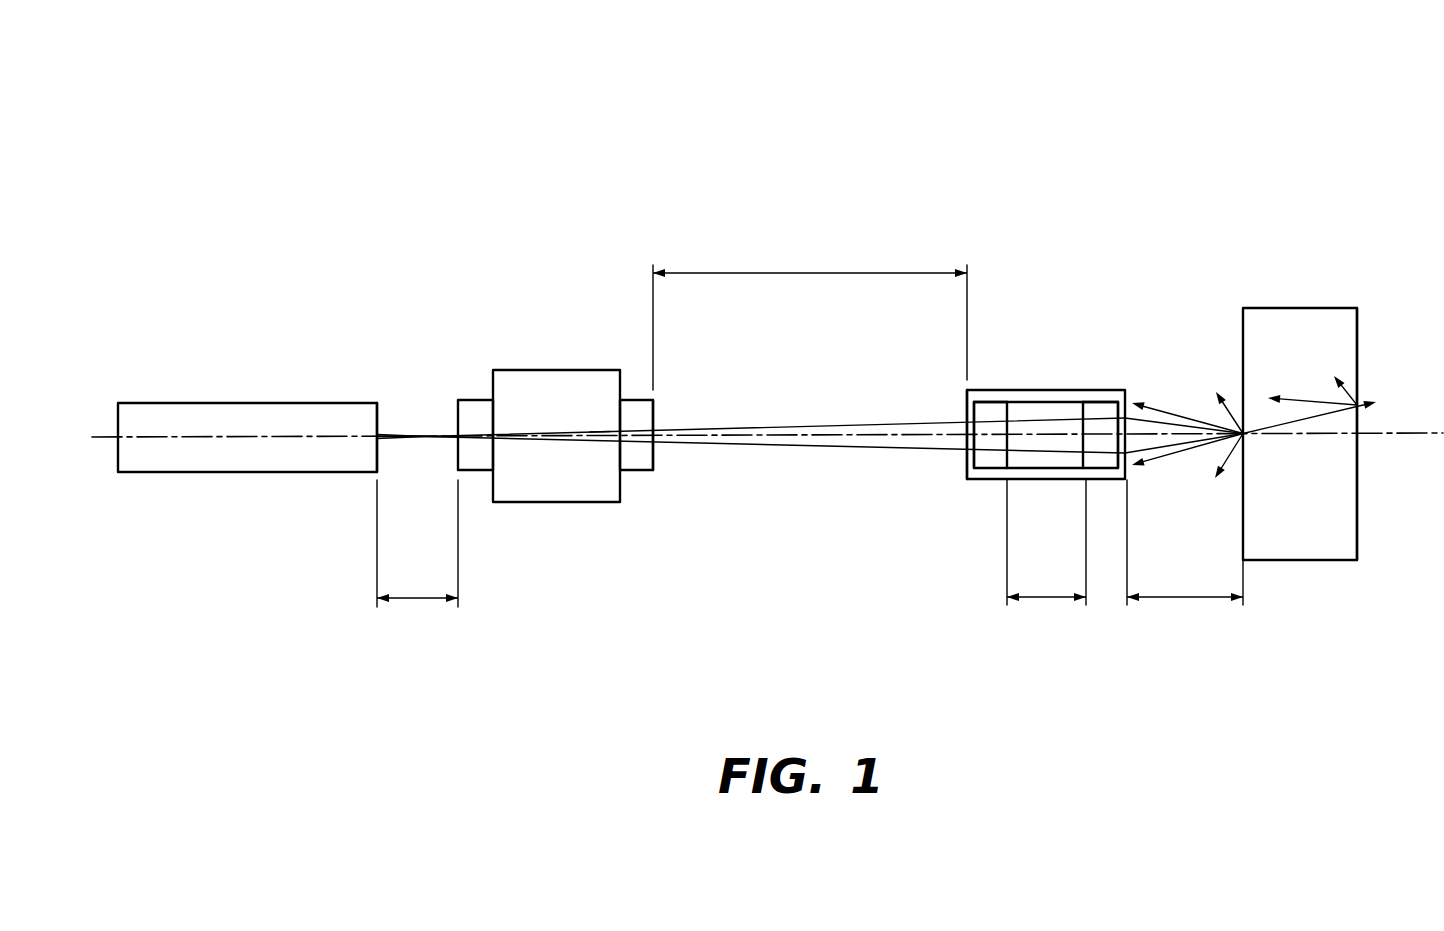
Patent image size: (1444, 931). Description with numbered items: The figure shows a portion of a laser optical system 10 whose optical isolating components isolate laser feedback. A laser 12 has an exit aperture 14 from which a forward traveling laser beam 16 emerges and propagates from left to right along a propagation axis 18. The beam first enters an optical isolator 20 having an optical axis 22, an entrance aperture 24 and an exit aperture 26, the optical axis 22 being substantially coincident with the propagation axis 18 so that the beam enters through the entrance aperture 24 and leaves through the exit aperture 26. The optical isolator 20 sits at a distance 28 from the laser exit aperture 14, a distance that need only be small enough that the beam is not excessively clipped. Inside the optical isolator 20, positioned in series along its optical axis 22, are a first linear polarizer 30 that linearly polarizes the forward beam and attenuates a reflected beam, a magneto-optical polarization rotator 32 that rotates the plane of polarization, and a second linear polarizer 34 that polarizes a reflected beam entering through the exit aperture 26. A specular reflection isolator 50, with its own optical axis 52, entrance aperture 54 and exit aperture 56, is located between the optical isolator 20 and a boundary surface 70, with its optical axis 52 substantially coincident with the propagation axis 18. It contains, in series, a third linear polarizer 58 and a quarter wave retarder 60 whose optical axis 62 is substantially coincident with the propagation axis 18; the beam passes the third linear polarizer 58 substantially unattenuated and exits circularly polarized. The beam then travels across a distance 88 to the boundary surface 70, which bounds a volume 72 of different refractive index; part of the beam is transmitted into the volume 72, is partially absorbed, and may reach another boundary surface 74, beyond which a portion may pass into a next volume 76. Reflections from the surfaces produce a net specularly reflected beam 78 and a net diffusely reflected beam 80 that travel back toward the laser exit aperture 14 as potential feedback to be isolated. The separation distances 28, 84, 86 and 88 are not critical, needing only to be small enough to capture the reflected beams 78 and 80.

The laser optical system 10 is at (345, 210).
The laser 12 is at (235, 408).
The exit aperture 14 is at (378, 412).
The forward traveling laser beam 16 is at (423, 436).
The propagation axis 18 is at (820, 436).
The optical isolator 20 is at (586, 361).
The optical axis 22 is at (600, 432).
The entrance aperture 24 is at (457, 450).
The exit aperture 26 is at (657, 453).
The distance 28 is at (418, 600).
The first linear polarizer 30 is at (475, 412).
The magneto-optical polarization rotator 32 is at (543, 392).
The second linear polarizer 34 is at (645, 417).
The specular reflection isolator 50 is at (1016, 376).
The optical axis 52 is at (993, 433).
The entrance aperture 54 is at (965, 460).
The exit aperture 56 is at (1130, 465).
The third linear polarizer 58 is at (990, 412).
The quarter wave retarder 60 is at (1102, 412).
The optical axis 62 is at (1103, 433).
The boundary surface 70 is at (1243, 497).
The volume 72 is at (1341, 390).
The boundary surface 74 is at (1357, 517).
The next volume 76 is at (1380, 477).
The net specularly reflected beam 78 is at (1137, 402).
The net diffusely reflected beam 80 is at (1240, 417).
The separation distance 84 is at (775, 273).
The separation distance 86 is at (1042, 598).
The distance 88 is at (1174, 598).